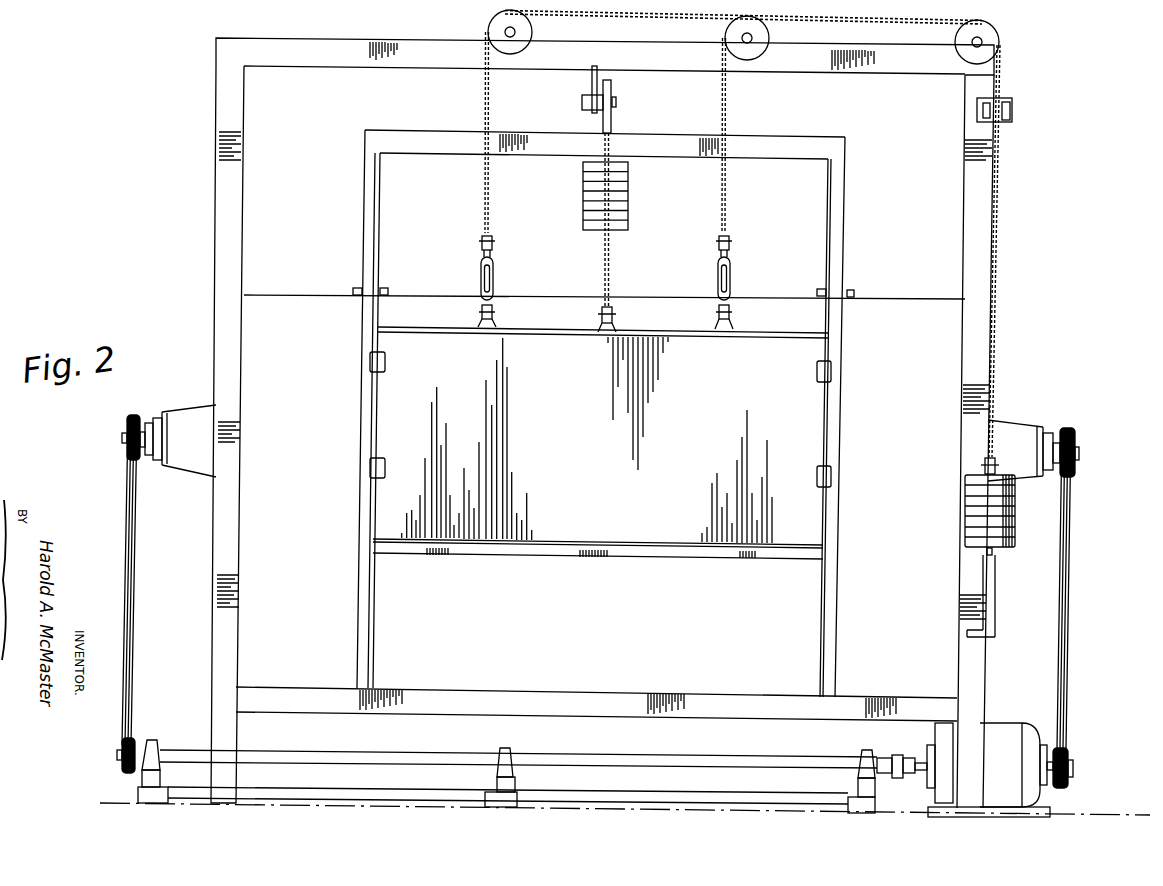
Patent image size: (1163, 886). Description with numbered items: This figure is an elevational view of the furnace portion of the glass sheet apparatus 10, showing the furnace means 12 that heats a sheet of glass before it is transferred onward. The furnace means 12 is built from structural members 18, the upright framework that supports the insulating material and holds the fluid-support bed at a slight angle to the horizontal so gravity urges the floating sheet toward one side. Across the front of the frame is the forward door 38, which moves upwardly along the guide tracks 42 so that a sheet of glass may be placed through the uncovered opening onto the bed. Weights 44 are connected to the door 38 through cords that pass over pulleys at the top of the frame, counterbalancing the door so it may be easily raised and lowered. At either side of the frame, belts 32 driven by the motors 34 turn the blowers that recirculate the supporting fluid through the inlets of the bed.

The glass sheet handling apparatus 10 is at (1082, 90).
The furnace means 12 is at (206, 214).
The structural members 18 is at (222, 617).
The belts 32 is at (135, 547).
The motors 34 is at (1043, 738).
The forward door 38 is at (805, 441).
The guide tracks 42 is at (365, 313).
The weights 44 is at (620, 212).